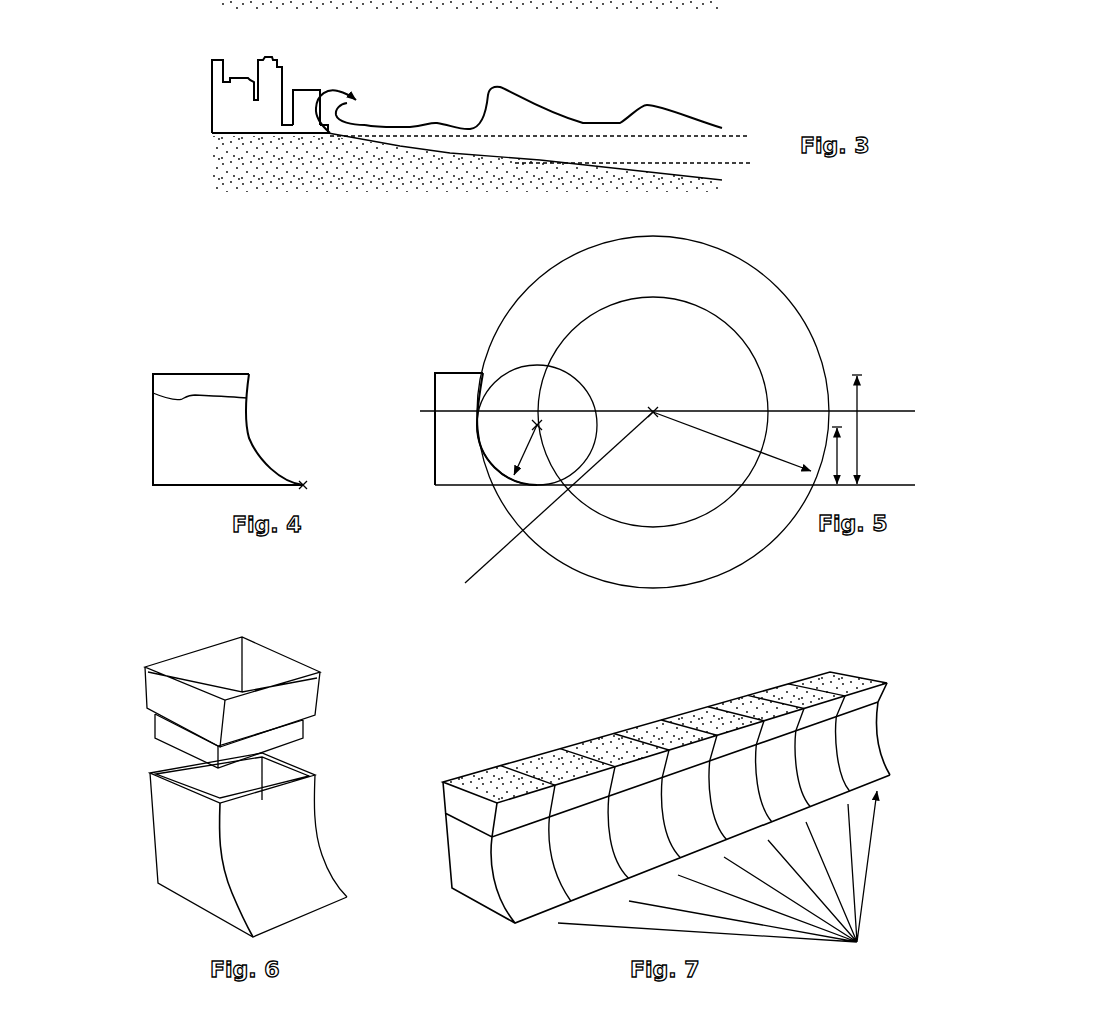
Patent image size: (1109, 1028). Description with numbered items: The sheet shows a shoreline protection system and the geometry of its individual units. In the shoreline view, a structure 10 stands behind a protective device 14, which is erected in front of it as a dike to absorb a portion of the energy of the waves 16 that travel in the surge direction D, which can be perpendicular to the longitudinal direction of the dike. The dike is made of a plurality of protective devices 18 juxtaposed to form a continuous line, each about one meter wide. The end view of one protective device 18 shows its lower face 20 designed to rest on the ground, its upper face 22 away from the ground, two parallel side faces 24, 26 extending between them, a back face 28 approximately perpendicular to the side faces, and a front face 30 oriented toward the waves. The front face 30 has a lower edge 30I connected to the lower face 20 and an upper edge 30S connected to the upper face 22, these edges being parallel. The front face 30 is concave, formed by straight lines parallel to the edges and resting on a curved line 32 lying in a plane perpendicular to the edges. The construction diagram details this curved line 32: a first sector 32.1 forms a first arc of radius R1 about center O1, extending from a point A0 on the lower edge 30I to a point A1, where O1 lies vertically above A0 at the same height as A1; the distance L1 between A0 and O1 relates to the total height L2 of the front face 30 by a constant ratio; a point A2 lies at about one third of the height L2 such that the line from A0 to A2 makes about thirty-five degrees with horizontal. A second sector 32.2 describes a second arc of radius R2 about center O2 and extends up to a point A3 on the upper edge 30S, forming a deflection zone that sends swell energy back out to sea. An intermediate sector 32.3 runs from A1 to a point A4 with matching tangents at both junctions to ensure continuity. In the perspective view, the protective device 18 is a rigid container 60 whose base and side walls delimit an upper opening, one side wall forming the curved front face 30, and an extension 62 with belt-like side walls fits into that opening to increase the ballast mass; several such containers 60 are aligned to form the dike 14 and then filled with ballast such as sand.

In FIG. 3, the structure 10 is at (246, 57).
In FIG. 3, the protective device 14 is at (309, 80).
In FIG. 7, the protective device 14 is at (859, 649).
In FIG. 3, the waves 16 is at (332, 94).
In FIG. 3, the protective device 18 is at (302, 120).
In FIG. 4, the protective device 18 is at (205, 366).
In FIG. 5, the protective device 18 is at (448, 362).
In FIG. 6, the protective device 18 is at (136, 794).
In FIG. 7, the protective device 18 is at (720, 881).
In FIG. 4, the lower face 20 is at (203, 486).
In FIG. 4, the upper face 22 is at (178, 372).
In FIG. 4, the side face 24 is at (167, 458).
In FIG. 6, the side face 24 is at (175, 842).
In FIG. 6, the side face 26 is at (315, 822).
In FIG. 4, the back face 28 is at (152, 423).
In FIG. 3, the front face 30 is at (318, 112).
In FIG. 4, the front face 30 is at (249, 420).
In FIG. 5, the front face 30 is at (484, 417).
In FIG. 6, the front face 30 is at (292, 882).
In FIG. 4, the upper edge 30S is at (249, 372).
In FIG. 5, the upper edge 30S is at (487, 378).
In FIG. 4, the lower edge 30I is at (303, 490).
In FIG. 5, the lower edge 30I is at (537, 485).
In FIG. 4, the curved line 32 is at (153, 393).
In FIG. 5, the curved line 32 is at (488, 437).
In FIG. 5, the first sector 32.1 is at (493, 468).
In FIG. 5, the second sector 32.2 is at (478, 408).
In FIG. 5, the intermediate sector 32.3 is at (477, 418).
In FIG. 6, the rigid container 60 is at (190, 888).
In FIG. 6, the extension 62 is at (325, 690).
In FIG. 3, the surge direction D is at (475, 72).
In FIG. 5, the center of the first arc O1 is at (537, 425).
In FIG. 5, the center of the second arc O2 is at (653, 412).
In FIG. 5, the radius of the first arc R1 is at (519, 450).
In FIG. 5, the radius of the second arc R2 is at (732, 441).
In FIG. 5, the distance between point A0 and center O1 L1 is at (844, 455).
In FIG. 5, the total height of the front face L2 is at (864, 429).
In FIG. 5, the point A0 is at (537, 485).
In FIG. 5, the point A1 is at (478, 433).
In FIG. 5, the point A2 is at (487, 452).
In FIG. 5, the point A3 is at (485, 410).
In FIG. 5, the point A4 is at (537, 420).